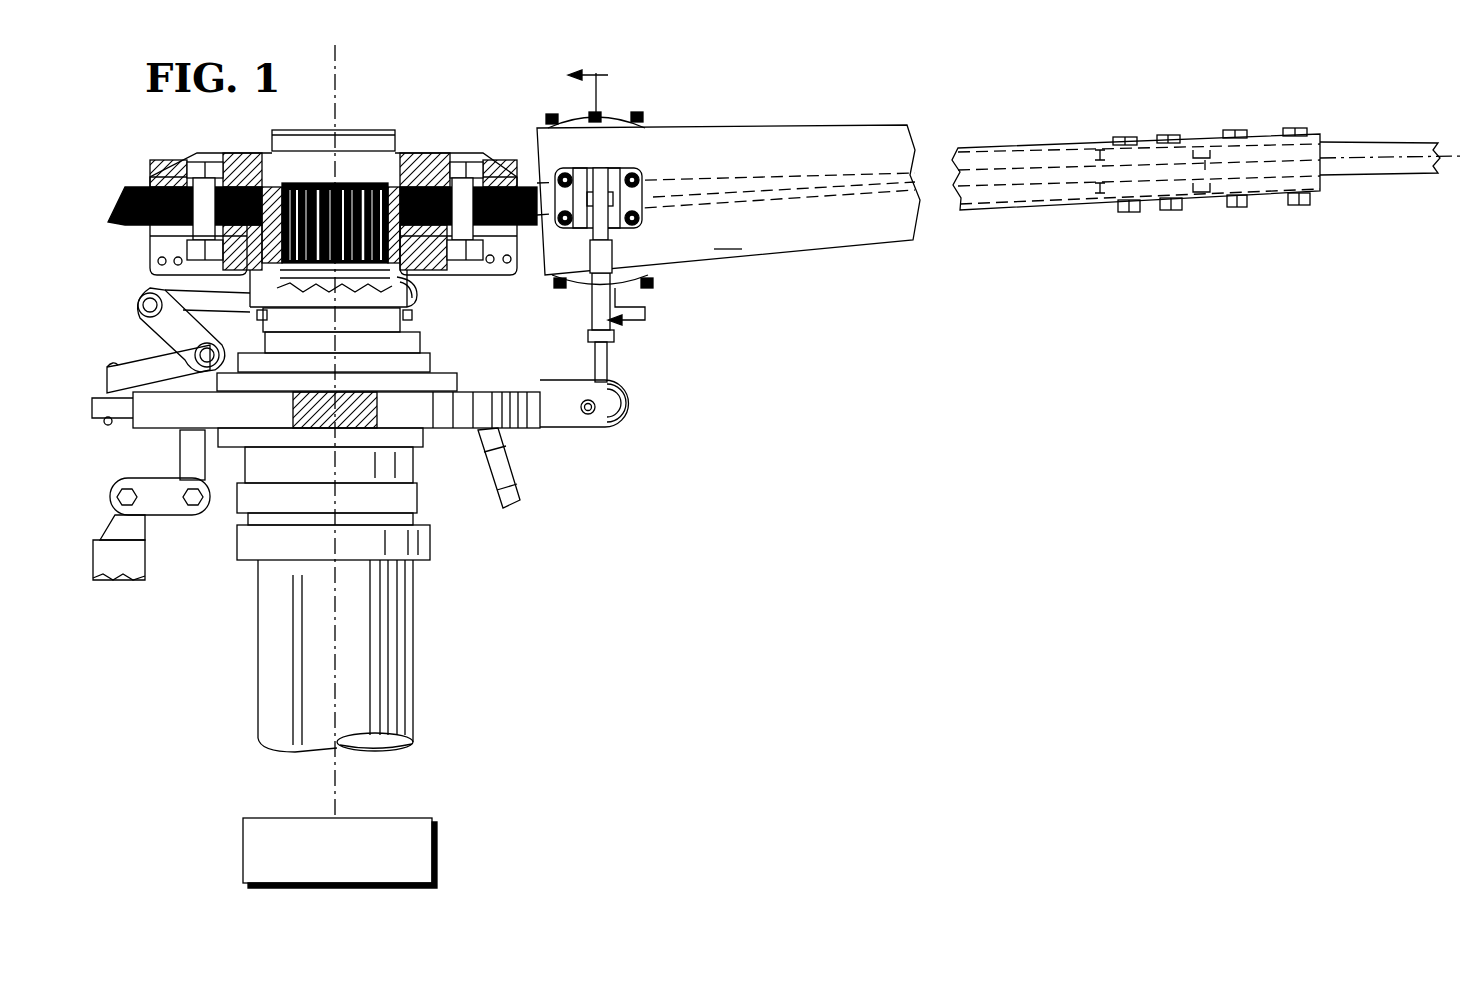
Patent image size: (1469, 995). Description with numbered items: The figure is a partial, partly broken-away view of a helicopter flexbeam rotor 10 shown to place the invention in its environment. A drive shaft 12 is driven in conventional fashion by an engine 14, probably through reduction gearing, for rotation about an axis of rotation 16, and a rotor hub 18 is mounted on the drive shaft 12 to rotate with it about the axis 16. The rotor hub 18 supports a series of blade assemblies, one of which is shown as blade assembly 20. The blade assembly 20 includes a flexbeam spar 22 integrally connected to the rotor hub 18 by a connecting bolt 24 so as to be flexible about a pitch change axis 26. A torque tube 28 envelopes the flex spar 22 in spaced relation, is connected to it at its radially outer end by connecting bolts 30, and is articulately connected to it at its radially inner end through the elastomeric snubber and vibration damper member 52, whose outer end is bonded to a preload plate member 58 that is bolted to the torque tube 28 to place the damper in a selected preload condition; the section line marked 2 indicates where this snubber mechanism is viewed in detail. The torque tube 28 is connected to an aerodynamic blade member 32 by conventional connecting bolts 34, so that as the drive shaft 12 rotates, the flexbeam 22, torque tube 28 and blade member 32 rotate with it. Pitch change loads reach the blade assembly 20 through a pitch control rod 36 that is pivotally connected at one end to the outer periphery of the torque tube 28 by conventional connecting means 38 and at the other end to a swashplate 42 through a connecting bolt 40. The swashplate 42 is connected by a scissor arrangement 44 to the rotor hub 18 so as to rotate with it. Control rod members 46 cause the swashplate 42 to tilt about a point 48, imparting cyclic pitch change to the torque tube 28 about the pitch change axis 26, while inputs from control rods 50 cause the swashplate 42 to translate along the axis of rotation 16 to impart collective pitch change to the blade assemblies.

The helicopter flexbeam rotor 10 is at (428, 98).
The drive shaft 12 is at (340, 640).
The engine 14 is at (380, 818).
The axis of rotation 16 is at (335, 58).
The rotor hub 18 is at (413, 150).
The blade assembly 20 is at (1022, 126).
The flexbeam spar 22 is at (763, 177).
The connecting bolt 24 is at (463, 165).
The pitch change axis 26 is at (840, 188).
The torque tube 28 is at (728, 200).
The connecting bolts 30 is at (1173, 135).
The aerodynamic blade member 32 is at (1355, 140).
The connecting bolts 34 is at (1307, 130).
The pitch control rod 36 is at (602, 303).
The connecting means 38 is at (637, 197).
The connecting bolt 40 is at (592, 416).
The swashplate 42 is at (560, 418).
The scissor arrangement 44 is at (150, 325).
The control rod members 46 is at (520, 497).
The point 48 is at (378, 410).
The control rods 50 is at (192, 453).
The elastomeric snubber and vibration damper member 52 is at (650, 100).
The preload plate member 58 is at (582, 122).
The section line 2- 2 is at (625, 196).